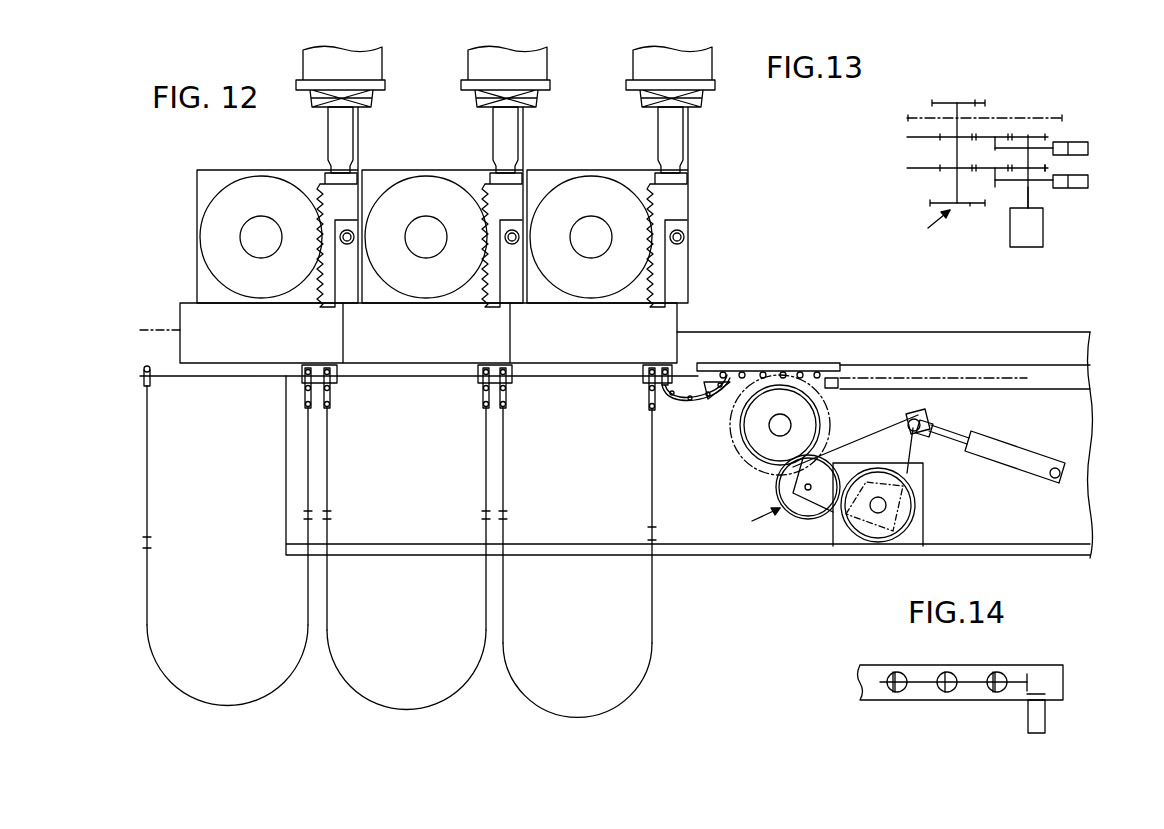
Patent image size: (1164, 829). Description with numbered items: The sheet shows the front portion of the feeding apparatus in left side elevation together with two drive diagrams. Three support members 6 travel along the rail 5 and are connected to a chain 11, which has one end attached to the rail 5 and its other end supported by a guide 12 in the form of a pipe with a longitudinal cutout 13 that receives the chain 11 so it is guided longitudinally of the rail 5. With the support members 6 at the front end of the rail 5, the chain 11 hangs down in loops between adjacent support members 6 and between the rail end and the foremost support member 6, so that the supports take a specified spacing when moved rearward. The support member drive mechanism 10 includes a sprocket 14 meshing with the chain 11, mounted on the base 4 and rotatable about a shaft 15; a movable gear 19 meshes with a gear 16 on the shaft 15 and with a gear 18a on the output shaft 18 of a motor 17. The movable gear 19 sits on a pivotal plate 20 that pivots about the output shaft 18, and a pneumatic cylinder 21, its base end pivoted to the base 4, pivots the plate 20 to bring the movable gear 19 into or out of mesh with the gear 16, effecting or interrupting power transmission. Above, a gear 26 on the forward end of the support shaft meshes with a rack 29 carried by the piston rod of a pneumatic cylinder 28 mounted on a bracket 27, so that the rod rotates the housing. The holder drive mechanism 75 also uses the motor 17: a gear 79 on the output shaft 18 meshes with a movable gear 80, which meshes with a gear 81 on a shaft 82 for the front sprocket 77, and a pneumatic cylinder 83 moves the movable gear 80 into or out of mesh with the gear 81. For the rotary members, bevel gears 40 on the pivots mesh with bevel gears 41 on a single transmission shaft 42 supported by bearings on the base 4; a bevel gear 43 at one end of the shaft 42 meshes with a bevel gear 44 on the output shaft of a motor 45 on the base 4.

In FIG. 12, the base 4 is at (993, 536).
In FIG. 13, the base 4 is at (1037, 117).
In FIG. 14, the base 4 is at (1058, 681).
In FIG. 12, the rail 5 is at (1007, 343).
In FIG. 12, the support members 6 is at (245, 352).
In FIG. 12, the support member drive mechanism 10 is at (753, 525).
In FIG. 13, the support member drive mechanism 10 is at (926, 231).
In FIG. 12, the chain 11 is at (655, 599).
In FIG. 12, the guide 12 is at (831, 364).
In FIG. 12, the cutout 13 is at (841, 382).
In FIG. 12, the sprocket 14 is at (740, 456).
In FIG. 13, the sprocket 14 is at (970, 205).
In FIG. 12, the shaft 15 is at (770, 423).
In FIG. 13, the shaft 15 is at (955, 183).
In FIG. 12, the gear 16 is at (762, 456).
In FIG. 13, the gear 16 is at (935, 168).
In FIG. 12, the motor 17 is at (912, 540).
In FIG. 13, the motor 17 is at (1044, 240).
In FIG. 12, the output shaft 18 is at (878, 513).
In FIG. 13, the output shaft 18 is at (1030, 193).
In FIG. 12, the gear 18a is at (856, 538).
In FIG. 13, the gear 18a is at (1052, 168).
In FIG. 12, the movable gear 19 is at (792, 518).
In FIG. 13, the movable gear 19 is at (988, 172).
In FIG. 12, the pivotal plate 20 is at (882, 437).
In FIG. 12, the pneumatic cylinder 21 is at (1021, 454).
In FIG. 13, the pneumatic cylinder 21 is at (1088, 186).
In FIG. 12, the gear 26 is at (232, 176).
In FIG. 12, the bracket 27 is at (358, 128).
In FIG. 12, the pneumatic cylinder 28 is at (367, 72).
In FIG. 12, the rack 29 is at (330, 192).
In FIG. 14, the bevel gear 40 is at (946, 671).
In FIG. 14, the bevel gears 41 is at (897, 692).
In FIG. 14, the transmission shaft 42 is at (925, 684).
In FIG. 14, the bevel gear 43 is at (1028, 675).
In FIG. 14, the bevel gear 44 is at (1050, 698).
In FIG. 14, the motor 45 is at (1043, 724).
In FIG. 13, the holder drive mechanism 75 is at (975, 103).
In FIG. 13, the front sprocket 77 is at (945, 102).
In FIG. 13, the gear 79 is at (1052, 135).
In FIG. 13, the movable gear 80 is at (985, 136).
In FIG. 13, the gear 81 is at (935, 137).
In FIG. 13, the shaft 82 is at (950, 112).
In FIG. 13, the pneumatic cylinder 83 is at (1090, 148).